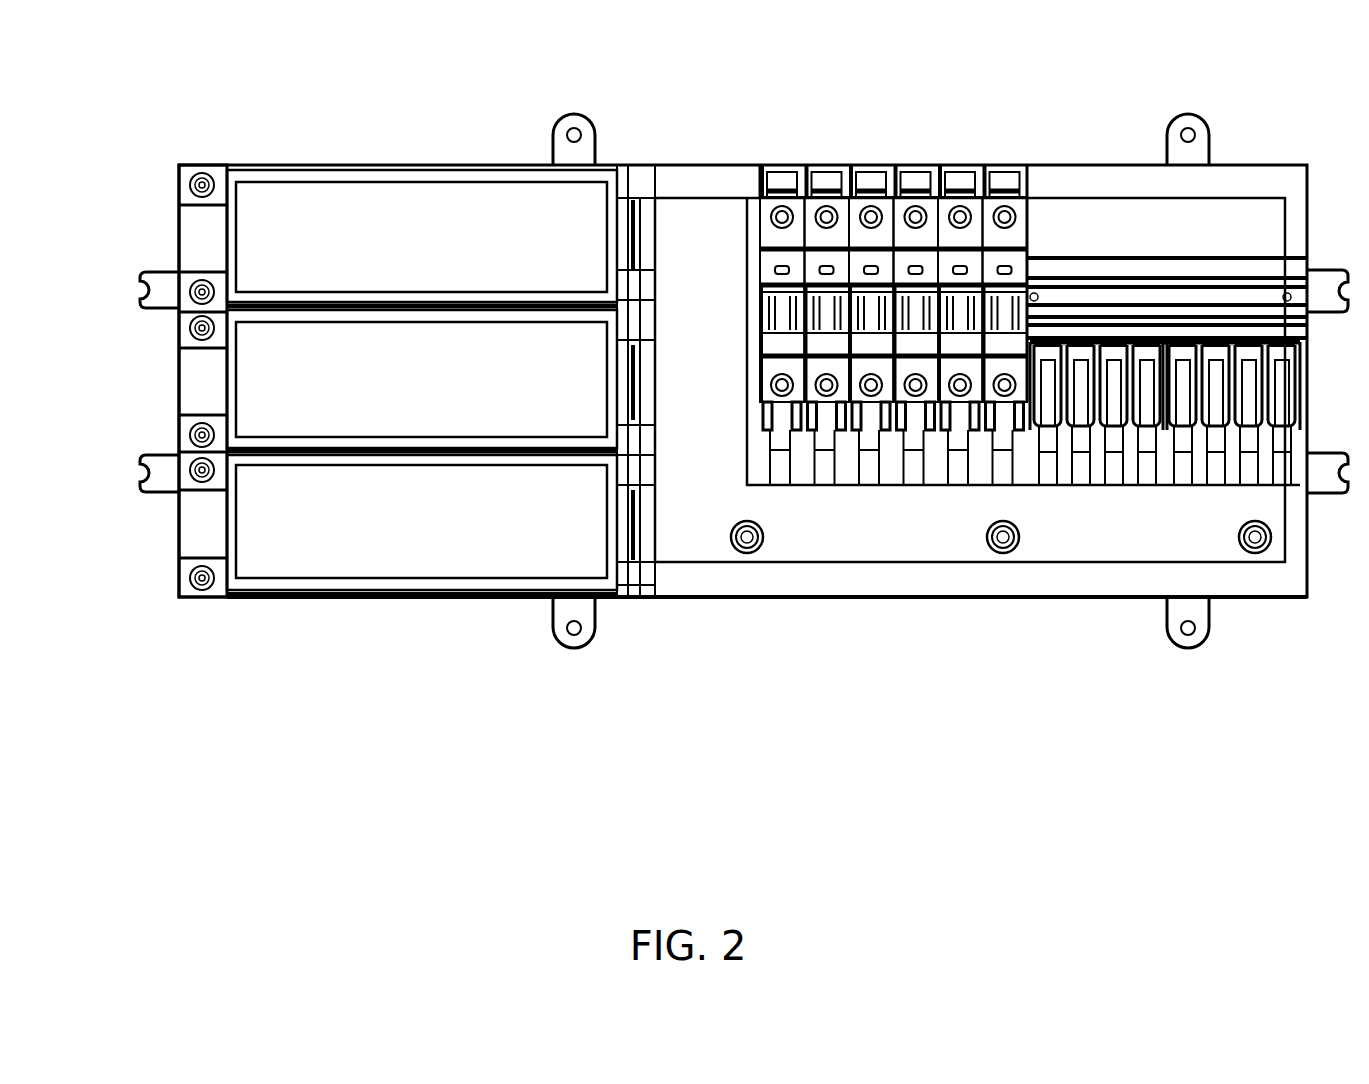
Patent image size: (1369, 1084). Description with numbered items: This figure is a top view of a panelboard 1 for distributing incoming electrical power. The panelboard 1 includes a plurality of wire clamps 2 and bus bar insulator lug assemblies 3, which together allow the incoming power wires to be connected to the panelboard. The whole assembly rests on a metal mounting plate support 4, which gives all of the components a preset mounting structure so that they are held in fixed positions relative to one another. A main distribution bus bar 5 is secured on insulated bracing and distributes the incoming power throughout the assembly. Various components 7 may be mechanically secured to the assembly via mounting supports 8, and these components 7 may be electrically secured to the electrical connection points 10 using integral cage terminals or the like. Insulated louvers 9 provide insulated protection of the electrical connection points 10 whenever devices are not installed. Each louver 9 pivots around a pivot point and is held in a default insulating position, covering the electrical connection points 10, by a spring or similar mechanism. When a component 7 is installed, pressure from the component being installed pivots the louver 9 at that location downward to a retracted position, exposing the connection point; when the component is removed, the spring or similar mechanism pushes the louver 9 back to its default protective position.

The panelboard 1 is at (158, 262).
The wire clamp 2 is at (188, 212).
The bus bar insulator lug assembly 3 is at (338, 198).
The metal mounting plate support 4 is at (523, 627).
The main distribution bus bar 5 is at (707, 210).
The component 7 is at (785, 188).
The mounting support 8 is at (1101, 270).
The insulated louver 9 is at (1271, 348).
The electrical connection point 10 is at (1165, 267).